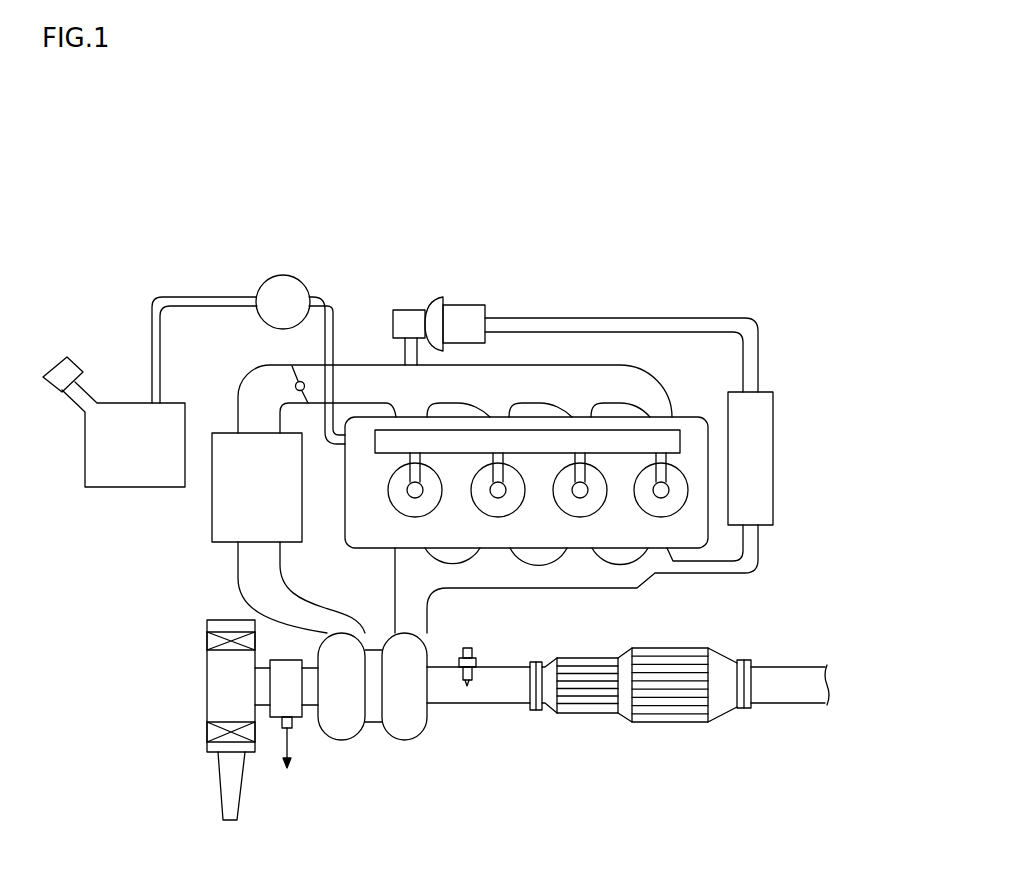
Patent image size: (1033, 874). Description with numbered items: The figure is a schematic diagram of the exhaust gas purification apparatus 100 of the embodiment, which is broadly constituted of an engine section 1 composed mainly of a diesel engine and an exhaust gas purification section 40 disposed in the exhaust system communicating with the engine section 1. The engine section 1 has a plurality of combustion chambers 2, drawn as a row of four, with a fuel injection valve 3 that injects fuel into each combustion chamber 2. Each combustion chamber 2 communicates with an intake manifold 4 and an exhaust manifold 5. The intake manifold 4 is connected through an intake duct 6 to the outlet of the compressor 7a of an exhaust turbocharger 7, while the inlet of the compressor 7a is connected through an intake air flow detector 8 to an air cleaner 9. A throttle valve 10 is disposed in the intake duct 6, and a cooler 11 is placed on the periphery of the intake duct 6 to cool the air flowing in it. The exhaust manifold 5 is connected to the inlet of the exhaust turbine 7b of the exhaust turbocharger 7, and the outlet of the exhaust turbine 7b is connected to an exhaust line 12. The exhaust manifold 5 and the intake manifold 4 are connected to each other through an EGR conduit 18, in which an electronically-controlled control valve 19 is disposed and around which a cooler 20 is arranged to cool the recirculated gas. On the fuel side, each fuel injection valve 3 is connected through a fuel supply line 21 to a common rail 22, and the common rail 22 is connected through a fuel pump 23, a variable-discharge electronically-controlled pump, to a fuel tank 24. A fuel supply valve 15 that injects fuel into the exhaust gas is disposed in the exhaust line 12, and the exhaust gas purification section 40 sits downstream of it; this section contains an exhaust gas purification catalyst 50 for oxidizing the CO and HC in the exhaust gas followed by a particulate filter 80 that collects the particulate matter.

The exhaust gas purification apparatus 100 is at (780, 139).
The engine section 1 is at (514, 406).
The combustion chamber 2 is at (410, 512).
The fuel injection valve 3 is at (405, 510).
The intake manifold 4 is at (660, 380).
The exhaust manifold 5 is at (570, 590).
The intake duct 6 is at (257, 402).
The exhaust turbocharger 7 is at (378, 742).
The compressor 7a is at (340, 722).
The exhaust turbine 7b is at (403, 722).
The intake air flow detector 8 is at (297, 723).
The air cleaner 9 is at (218, 672).
The throttle valve 10 is at (290, 380).
The cooler 11 is at (228, 505).
The exhaust line 12 is at (455, 705).
The fuel supply valve 15 is at (470, 648).
The EGR conduit 18 is at (603, 318).
The control valve 19 is at (407, 315).
The cooler 20 is at (760, 462).
The fuel supply line 21 is at (402, 490).
The common rail 22 is at (575, 443).
The fuel pump 23 is at (285, 275).
The fuel tank 24 is at (117, 467).
The exhaust gas purification section 40 is at (628, 680).
The exhaust gas purification catalyst 50 is at (585, 715).
The particulate filter 80 is at (680, 722).